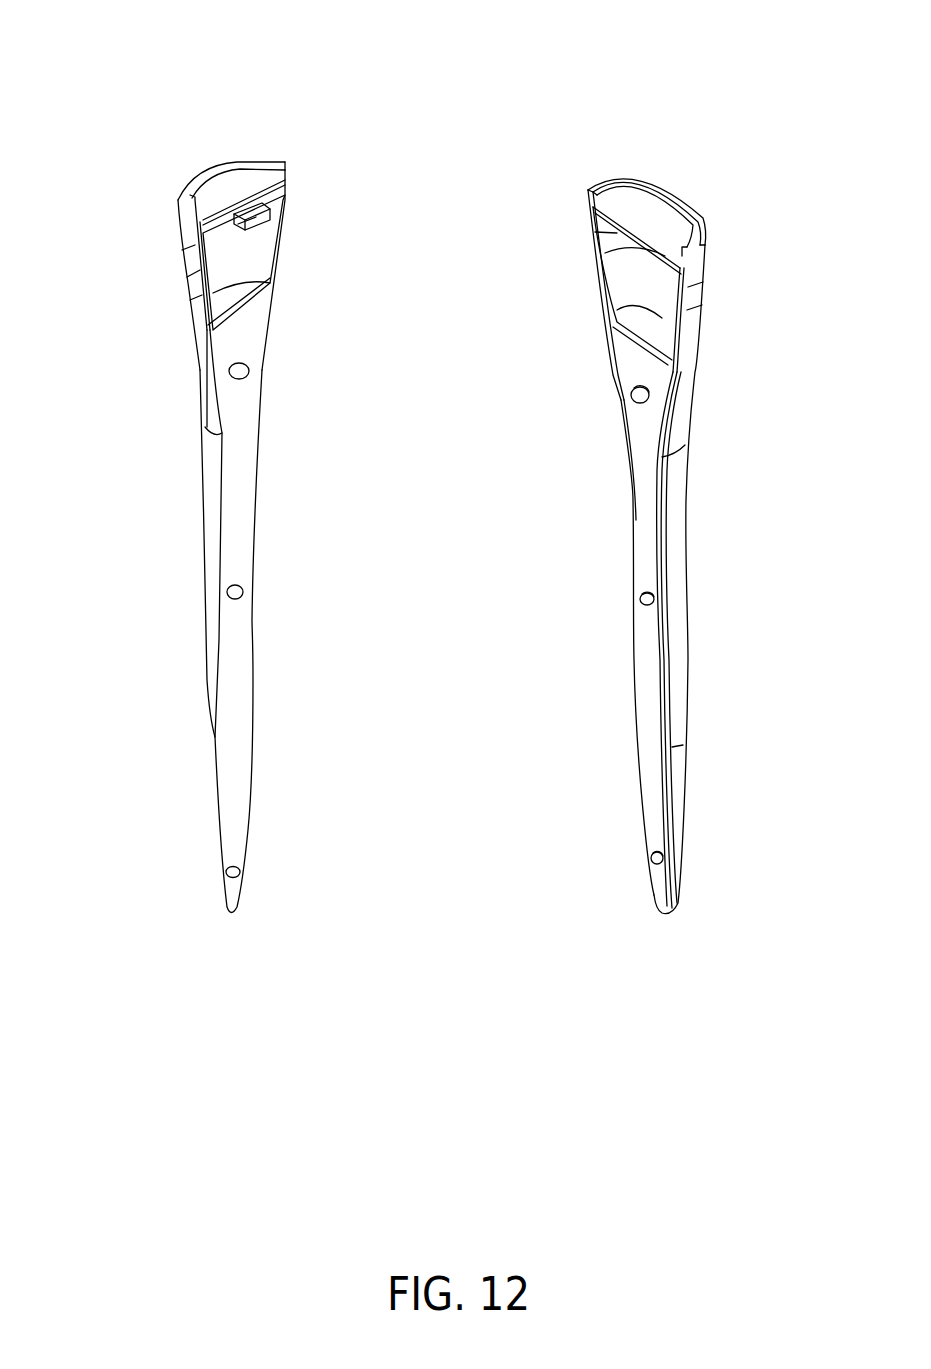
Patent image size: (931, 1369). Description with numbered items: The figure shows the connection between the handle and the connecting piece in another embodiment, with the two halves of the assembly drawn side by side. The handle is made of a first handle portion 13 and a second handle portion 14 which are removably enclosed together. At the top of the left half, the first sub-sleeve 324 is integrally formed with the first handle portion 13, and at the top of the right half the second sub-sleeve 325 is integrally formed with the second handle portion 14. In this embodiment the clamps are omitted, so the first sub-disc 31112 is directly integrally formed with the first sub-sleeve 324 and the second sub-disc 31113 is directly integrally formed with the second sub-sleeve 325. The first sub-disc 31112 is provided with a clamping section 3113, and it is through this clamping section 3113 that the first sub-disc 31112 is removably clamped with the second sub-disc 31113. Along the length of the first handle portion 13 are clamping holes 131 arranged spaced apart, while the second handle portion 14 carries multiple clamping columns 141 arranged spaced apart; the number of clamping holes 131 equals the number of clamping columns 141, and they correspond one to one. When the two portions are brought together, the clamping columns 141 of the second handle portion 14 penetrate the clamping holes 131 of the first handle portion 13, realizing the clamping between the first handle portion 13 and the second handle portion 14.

The first handle portion 13 is at (237, 513).
The clamping holes 131 is at (240, 370).
The second handle portion 14 is at (663, 547).
The clamping columns 141 is at (643, 397).
The first sub-sleeve 324 is at (212, 285).
The second sub-sleeve 325 is at (605, 293).
The clamping section 3113 is at (255, 220).
The first sub-disc 31112 is at (227, 197).
The second sub-disc 31113 is at (647, 230).